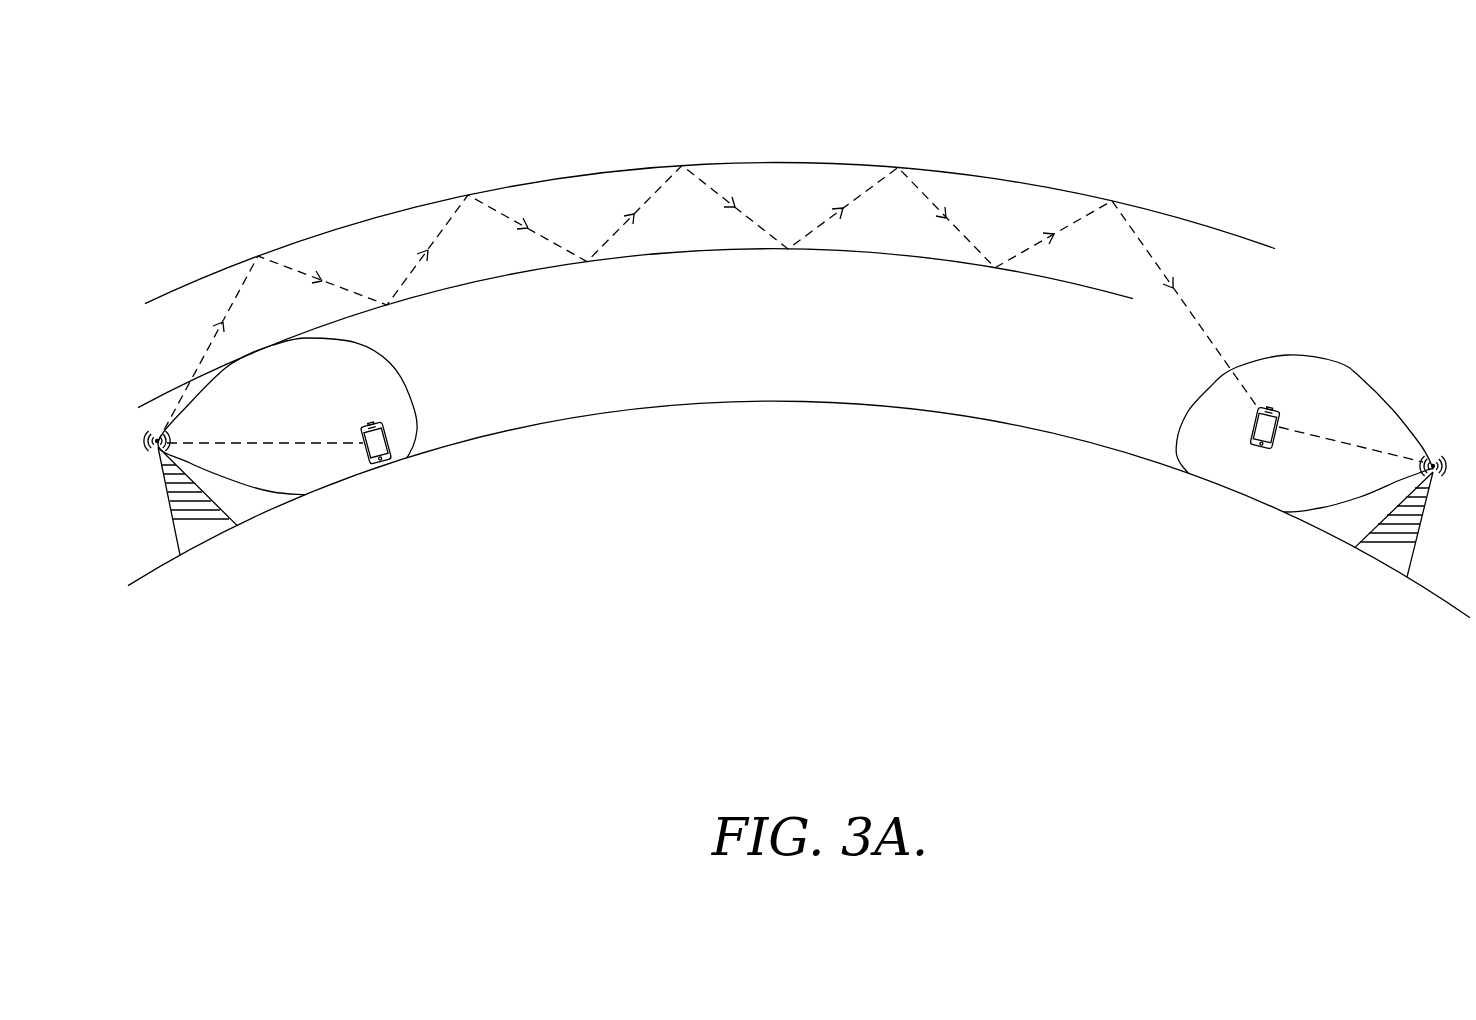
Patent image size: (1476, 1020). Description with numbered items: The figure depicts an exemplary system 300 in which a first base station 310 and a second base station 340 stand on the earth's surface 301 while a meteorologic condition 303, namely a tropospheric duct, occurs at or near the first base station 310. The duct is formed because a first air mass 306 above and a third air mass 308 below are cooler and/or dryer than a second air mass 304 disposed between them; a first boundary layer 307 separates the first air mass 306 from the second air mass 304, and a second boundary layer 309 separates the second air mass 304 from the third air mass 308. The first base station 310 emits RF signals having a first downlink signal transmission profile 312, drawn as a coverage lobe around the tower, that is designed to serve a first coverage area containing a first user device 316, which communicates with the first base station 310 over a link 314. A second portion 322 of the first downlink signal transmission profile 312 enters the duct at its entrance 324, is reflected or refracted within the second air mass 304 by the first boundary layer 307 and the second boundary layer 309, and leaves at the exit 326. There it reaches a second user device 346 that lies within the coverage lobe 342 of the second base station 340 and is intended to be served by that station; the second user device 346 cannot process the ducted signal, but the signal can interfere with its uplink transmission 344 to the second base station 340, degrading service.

The system 300 is at (1388, 128).
The earth surface 301 is at (160, 566).
The meteorologic condition 303 is at (970, 146).
The second air mass 304 is at (771, 219).
The first air mass 306 is at (771, 110).
The first boundary layer 307 is at (392, 212).
The third air mass 308 is at (771, 347).
The second boundary layer 309 is at (880, 256).
The first base station 310 is at (168, 466).
The first downlink signal transmission profile 312 is at (244, 490).
The first local communication link 314 is at (306, 450).
The first user device 316 is at (379, 466).
The second portion 322 is at (172, 410).
The entrance 324 is at (146, 330).
The exit 326 is at (1300, 270).
The second base station 340 is at (1422, 528).
The second coverage area 342 is at (1364, 375).
The uplink transmission 344 is at (1309, 430).
The second user device 346 is at (1260, 448).